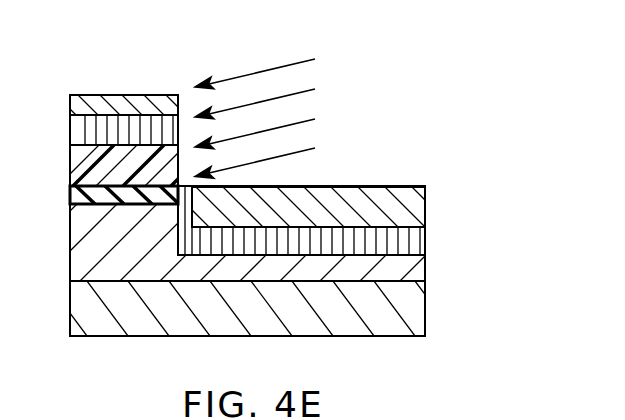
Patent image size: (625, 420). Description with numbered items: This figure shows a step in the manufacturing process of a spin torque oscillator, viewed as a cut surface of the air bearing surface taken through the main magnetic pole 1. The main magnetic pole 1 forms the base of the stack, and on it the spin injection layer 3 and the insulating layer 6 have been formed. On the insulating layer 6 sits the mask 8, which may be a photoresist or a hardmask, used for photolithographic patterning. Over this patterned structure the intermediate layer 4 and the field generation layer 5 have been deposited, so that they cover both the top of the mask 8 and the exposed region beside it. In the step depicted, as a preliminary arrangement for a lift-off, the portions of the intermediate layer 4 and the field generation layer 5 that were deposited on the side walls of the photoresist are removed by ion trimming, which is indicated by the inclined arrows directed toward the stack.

The main magnetic pole 1 is at (418, 315).
The spin injection layer 3 is at (418, 268).
The intermediate layer 4 is at (78, 130).
The field generation layer 5 is at (78, 103).
The insulating layer 6 is at (78, 196).
The mask 8 is at (78, 163).